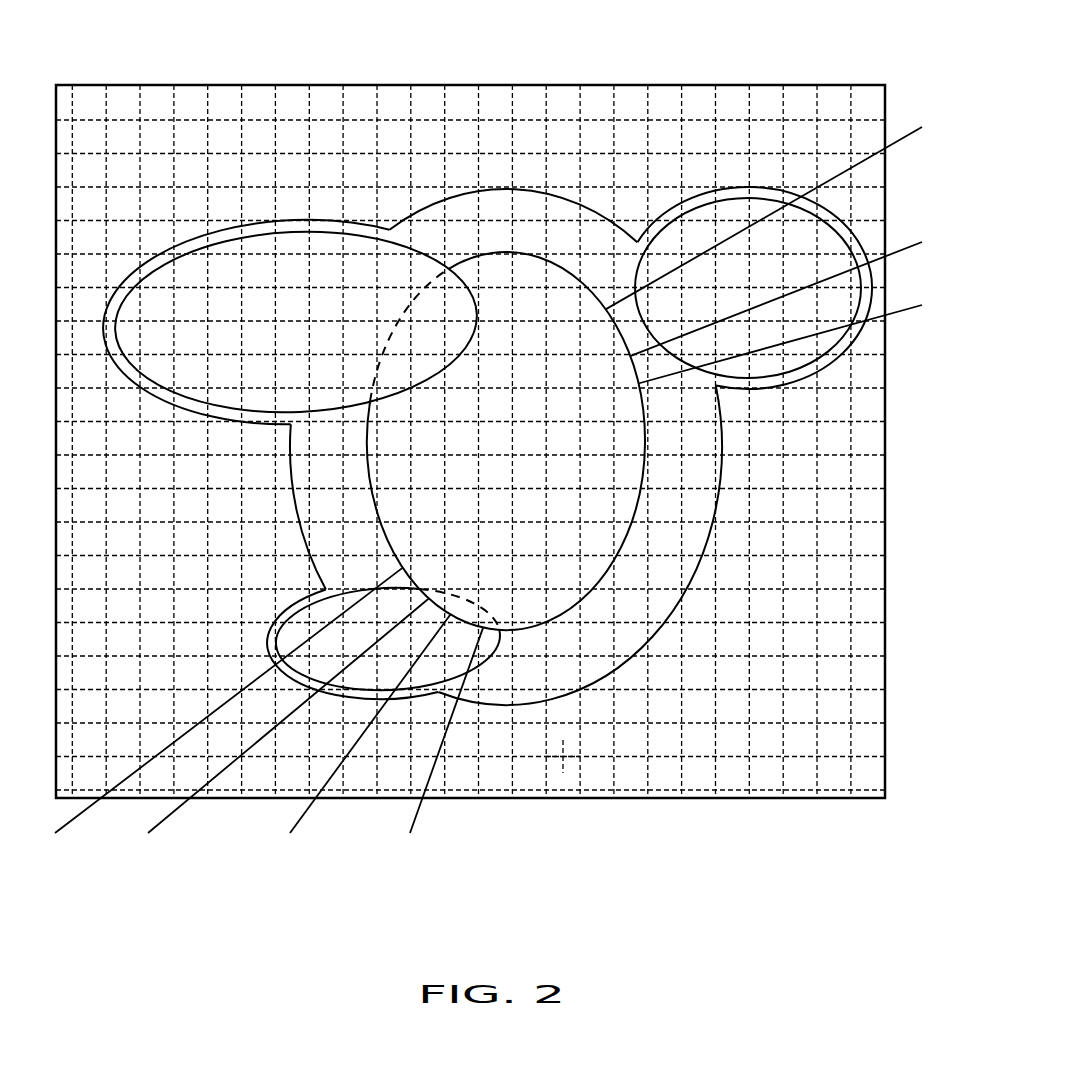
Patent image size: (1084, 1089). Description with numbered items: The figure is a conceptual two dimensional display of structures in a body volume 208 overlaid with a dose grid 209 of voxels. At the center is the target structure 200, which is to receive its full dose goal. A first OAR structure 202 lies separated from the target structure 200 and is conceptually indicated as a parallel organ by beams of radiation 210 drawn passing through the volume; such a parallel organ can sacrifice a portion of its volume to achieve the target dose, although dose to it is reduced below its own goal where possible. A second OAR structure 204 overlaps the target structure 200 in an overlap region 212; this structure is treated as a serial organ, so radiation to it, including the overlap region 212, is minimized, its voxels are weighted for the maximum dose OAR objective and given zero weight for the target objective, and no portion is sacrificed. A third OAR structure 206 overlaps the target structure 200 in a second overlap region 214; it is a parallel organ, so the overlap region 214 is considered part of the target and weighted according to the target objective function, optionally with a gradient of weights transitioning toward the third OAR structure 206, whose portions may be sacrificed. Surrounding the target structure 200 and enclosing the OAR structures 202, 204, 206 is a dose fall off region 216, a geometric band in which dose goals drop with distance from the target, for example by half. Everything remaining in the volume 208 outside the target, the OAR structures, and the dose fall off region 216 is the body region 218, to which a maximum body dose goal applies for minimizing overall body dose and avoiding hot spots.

The target structure 200 is at (532, 468).
The first OAR structure 202 is at (747, 293).
The second OAR structure 204 is at (315, 333).
The third OAR structure 206 is at (290, 633).
The volume 208 is at (224, 84).
The dose grid 209 is at (560, 773).
The beams of radiation 210 is at (910, 308).
The overlap region 212 is at (455, 348).
The second overlap region 214 is at (463, 600).
The dose fall off region 216 is at (700, 518).
The body region 218 is at (407, 166).